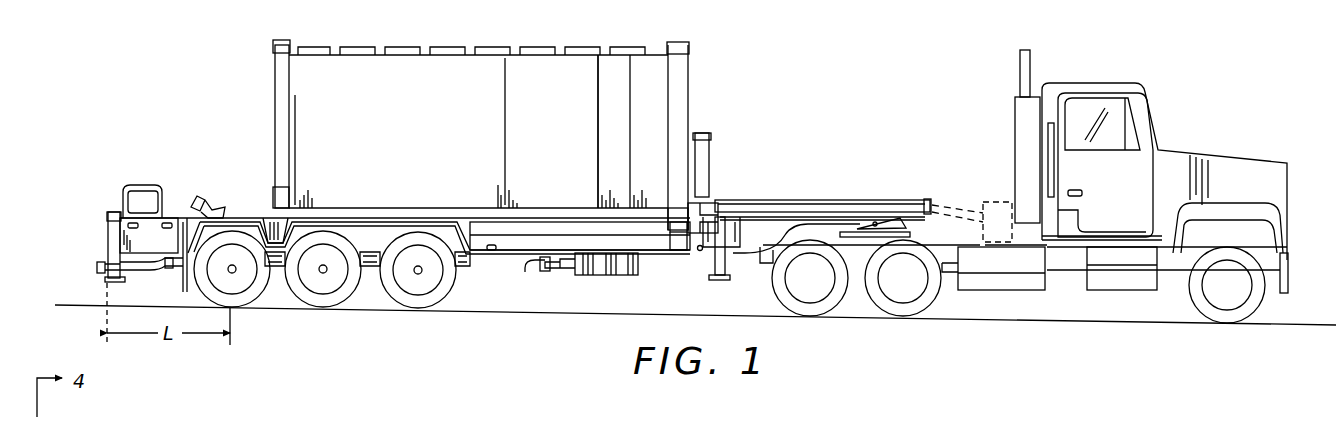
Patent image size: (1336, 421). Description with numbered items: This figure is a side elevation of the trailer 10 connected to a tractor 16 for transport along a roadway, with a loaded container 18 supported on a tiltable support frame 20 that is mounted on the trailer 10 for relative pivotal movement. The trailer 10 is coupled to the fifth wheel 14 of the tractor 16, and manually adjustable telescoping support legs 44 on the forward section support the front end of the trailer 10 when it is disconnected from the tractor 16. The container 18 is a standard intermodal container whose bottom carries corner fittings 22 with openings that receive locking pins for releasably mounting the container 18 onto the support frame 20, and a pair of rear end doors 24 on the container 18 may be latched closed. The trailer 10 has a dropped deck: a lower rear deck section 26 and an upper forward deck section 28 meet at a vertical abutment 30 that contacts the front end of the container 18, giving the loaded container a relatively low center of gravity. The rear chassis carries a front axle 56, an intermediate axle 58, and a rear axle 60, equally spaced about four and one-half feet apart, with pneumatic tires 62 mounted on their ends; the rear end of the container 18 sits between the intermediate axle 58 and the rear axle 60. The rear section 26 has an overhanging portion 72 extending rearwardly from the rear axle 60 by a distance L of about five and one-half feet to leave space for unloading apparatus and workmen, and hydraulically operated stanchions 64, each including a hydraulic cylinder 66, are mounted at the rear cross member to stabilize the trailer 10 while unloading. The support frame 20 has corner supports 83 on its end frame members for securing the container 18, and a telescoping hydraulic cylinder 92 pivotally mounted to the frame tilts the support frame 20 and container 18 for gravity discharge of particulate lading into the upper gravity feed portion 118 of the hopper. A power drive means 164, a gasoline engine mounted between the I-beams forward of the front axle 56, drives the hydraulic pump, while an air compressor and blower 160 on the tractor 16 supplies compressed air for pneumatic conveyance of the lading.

The trailer 10 is at (818, 198).
The fifth wheel 14 is at (891, 228).
The tractor 16 is at (993, 210).
The container 18 is at (555, 126).
The tiltable support frame 20 is at (500, 253).
The corner fittings 22 is at (273, 187).
The rear end doors 24 is at (273, 58).
The rear deck section 26 is at (588, 233).
The forward deck section 28 is at (538, 233).
The vertical abutment 30 is at (676, 217).
The telescoping support legs 44 is at (726, 258).
The front axle 56 is at (421, 273).
The intermediate axle 58 is at (327, 272).
The rear axle 60 is at (235, 272).
The pneumatic tires 62 is at (337, 301).
The stanchions 64 is at (107, 208).
The hydraulic cylinder 66 is at (115, 237).
The overhanging portion 72 is at (173, 214).
The corner supports 83 is at (276, 217).
The hydraulic cylinder 92 is at (709, 143).
The upper gravity feed portion 118 is at (211, 205).
The air compressor and blower 160 is at (995, 203).
The power drive means 164 is at (598, 276).